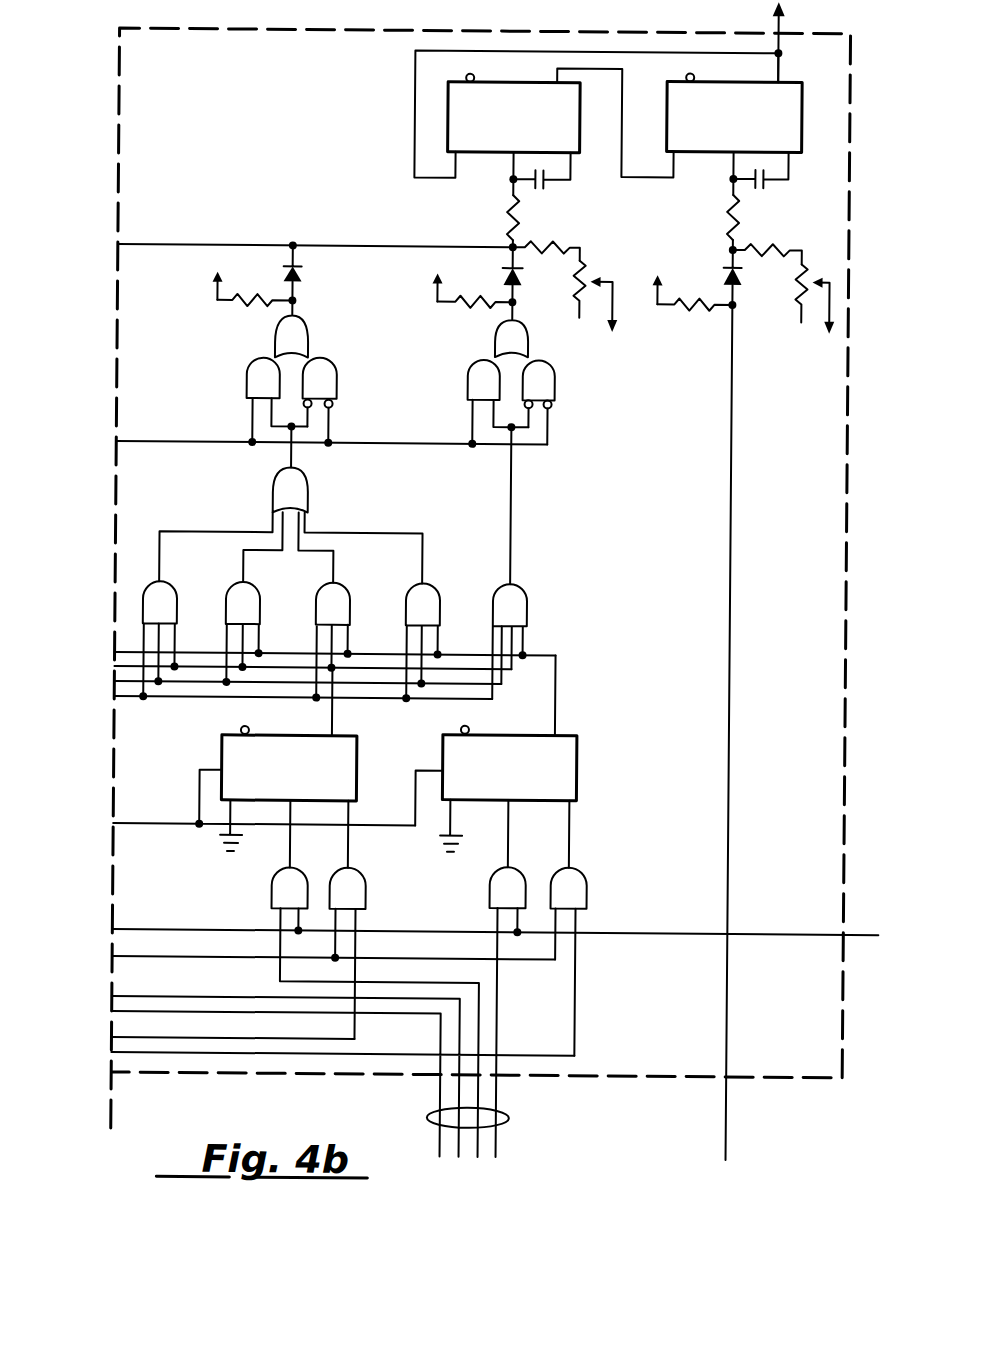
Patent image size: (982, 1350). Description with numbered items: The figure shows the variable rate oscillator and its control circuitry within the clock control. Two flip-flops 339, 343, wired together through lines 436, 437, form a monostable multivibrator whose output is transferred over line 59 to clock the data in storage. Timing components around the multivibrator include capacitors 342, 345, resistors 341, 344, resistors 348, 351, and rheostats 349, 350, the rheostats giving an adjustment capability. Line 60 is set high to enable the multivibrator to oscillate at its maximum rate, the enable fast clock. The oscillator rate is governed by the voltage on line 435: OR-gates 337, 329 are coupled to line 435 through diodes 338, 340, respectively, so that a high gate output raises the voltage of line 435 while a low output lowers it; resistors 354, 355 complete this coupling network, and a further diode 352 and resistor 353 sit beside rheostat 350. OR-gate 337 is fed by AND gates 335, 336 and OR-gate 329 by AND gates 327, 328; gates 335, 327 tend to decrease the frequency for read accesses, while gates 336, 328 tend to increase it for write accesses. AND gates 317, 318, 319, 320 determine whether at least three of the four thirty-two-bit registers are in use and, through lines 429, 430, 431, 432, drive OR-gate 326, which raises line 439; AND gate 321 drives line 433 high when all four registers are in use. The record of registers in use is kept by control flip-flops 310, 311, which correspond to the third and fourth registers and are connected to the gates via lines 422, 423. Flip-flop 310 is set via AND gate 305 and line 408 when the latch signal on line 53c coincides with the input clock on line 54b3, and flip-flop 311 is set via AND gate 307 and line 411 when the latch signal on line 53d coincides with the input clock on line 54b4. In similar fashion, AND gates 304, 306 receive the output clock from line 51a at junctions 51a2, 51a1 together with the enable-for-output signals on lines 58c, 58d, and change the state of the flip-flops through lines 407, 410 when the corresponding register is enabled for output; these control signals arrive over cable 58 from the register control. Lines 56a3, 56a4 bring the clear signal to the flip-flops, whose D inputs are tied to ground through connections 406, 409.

The output line 59 is at (768, 21).
The flip-flop FF10 339 is at (485, 82).
The flip-flop FF11 343 is at (706, 80).
The line 437 is at (414, 181).
The line 436 is at (637, 178).
The resistor 341 is at (505, 206).
The capacitor 342 is at (542, 187).
The line 435 is at (507, 244).
The resistor 348 is at (543, 242).
The rheostat 349 is at (588, 262).
The diode 340 is at (519, 280).
The resistor 355 is at (468, 306).
The OR-gate 329 is at (527, 334).
The AND gate 327 is at (465, 387).
The AND gate 328 is at (556, 374).
The line 433 is at (513, 522).
The diode 338 is at (298, 281).
The resistor 354 is at (248, 307).
The OR-gate 337 is at (307, 331).
The AND gate 335 is at (244, 390).
The AND gate 336 is at (335, 373).
The line 439 is at (287, 456).
The OR-gate 326 is at (308, 479).
The conductor 429 is at (206, 532).
The conductor 430 is at (242, 552).
The conductor 431 is at (336, 551).
The conductor 432 is at (373, 533).
The AND gate 317 is at (178, 602).
The AND gate 318 is at (262, 602).
The AND gate 319 is at (352, 602).
The AND gate 320 is at (442, 602).
The AND gate 321 is at (530, 602).
The conductor 422 is at (337, 718).
The conductor 423 is at (558, 716).
The control flip-flop FF6 310 is at (268, 736).
The control flip-flop FF7 311 is at (486, 734).
The input line 56a3 is at (198, 781).
The input line 56a4 is at (416, 779).
The ground connection 406 is at (222, 834).
The conductor 407 is at (289, 859).
The line 408 is at (348, 860).
The ground connection 409 is at (450, 833).
The conductor 410 is at (508, 857).
The line 411 is at (569, 844).
The AND gate 304 is at (273, 892).
The AND gate 305 is at (368, 881).
The AND gate 306 is at (491, 890).
The AND gate 307 is at (589, 879).
The input line 58c is at (282, 922).
The line 53c is at (360, 921).
The input line 58d is at (498, 920).
The line 53d is at (581, 919).
The line 51a is at (863, 928).
The line junction 51a1 is at (523, 931).
The line junction 51a2 is at (305, 931).
The line 54b3 is at (352, 970).
The line 54b4 is at (561, 960).
The line 58 is at (512, 1117).
The line 60 is at (732, 1116).
The resistor 344 is at (724, 208).
The capacitor 345 is at (763, 185).
The resistor 351 is at (760, 243).
The rheostat 350 is at (823, 297).
The diode 352 is at (739, 278).
The resistor 353 is at (690, 307).